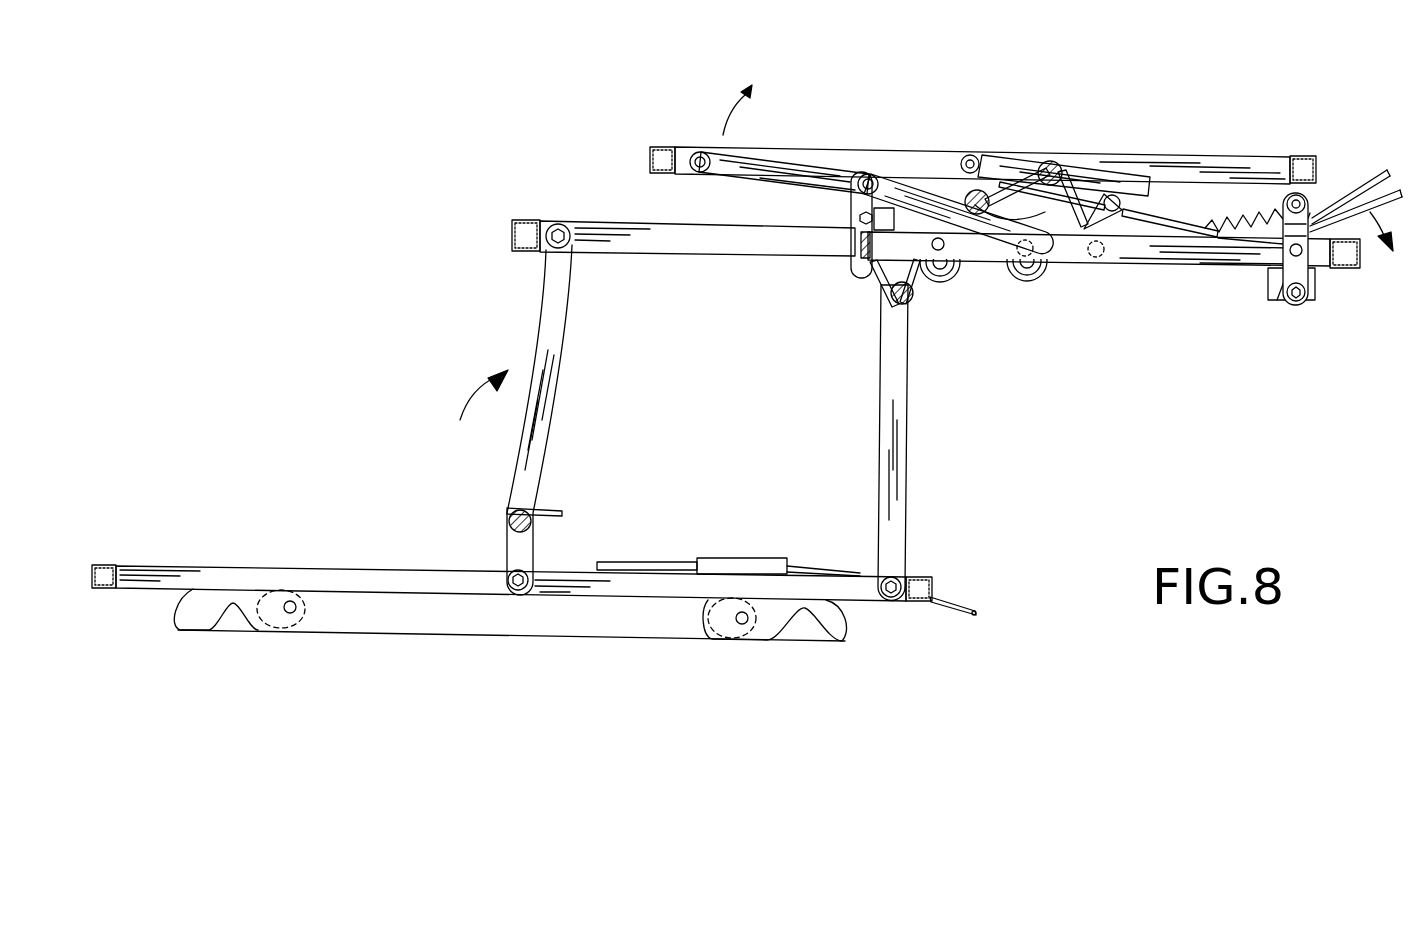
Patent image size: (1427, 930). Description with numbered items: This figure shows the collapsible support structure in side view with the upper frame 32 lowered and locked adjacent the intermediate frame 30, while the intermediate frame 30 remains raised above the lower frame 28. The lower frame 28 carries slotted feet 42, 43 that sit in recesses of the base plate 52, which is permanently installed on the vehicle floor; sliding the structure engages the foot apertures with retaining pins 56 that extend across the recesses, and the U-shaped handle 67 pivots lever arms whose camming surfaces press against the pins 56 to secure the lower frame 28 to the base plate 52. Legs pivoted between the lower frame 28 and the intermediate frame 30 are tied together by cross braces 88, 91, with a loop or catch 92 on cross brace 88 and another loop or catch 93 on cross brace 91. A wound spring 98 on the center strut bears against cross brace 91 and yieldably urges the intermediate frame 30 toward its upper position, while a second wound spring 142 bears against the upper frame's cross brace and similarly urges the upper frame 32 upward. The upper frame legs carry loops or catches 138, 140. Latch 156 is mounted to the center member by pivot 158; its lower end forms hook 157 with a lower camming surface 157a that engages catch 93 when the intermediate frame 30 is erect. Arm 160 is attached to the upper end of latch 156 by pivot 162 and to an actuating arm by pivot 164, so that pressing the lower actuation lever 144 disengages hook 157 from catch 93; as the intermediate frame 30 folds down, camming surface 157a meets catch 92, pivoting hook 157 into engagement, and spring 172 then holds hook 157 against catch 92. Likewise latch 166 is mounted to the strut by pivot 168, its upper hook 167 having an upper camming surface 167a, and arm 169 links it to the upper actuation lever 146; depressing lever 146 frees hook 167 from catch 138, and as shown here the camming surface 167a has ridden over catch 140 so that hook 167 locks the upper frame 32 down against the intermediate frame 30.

The lower frame 28 is at (92, 567).
The intermediate frame 30 is at (512, 230).
The upper frame 32 is at (650, 150).
The slotted foot 42 is at (272, 629).
The slotted foot 43 is at (710, 622).
The base plate 52 is at (480, 638).
The retaining pin 56 is at (300, 612).
The U-shaped handle 67 is at (978, 613).
The cross brace 88 is at (535, 527).
The cross brace 91 is at (906, 302).
The loop or catch 92 is at (560, 512).
The loop or catch 93 is at (880, 283).
The wound spring 98 is at (955, 283).
The loop or catch 138 is at (1025, 182).
The loop or catch 140 is at (1083, 192).
The wound spring 142 is at (1065, 285).
The lower actuation lever 144 is at (1398, 200).
The upper actuation lever 146 is at (1387, 170).
The latch 156 is at (848, 243).
The hook 157 is at (855, 300).
The lower camming surface 157a is at (870, 290).
The pivot 158 is at (855, 218).
The arm 160 is at (1010, 282).
The pivot 162 is at (868, 174).
The pivot 164 is at (1277, 310).
The latch 166 is at (1130, 232).
The hook 167 is at (1127, 222).
The upper camming surface 167a is at (1092, 176).
The pivot 168 is at (1100, 258).
The arm 169 is at (1184, 214).
The spring 172 is at (1268, 200).